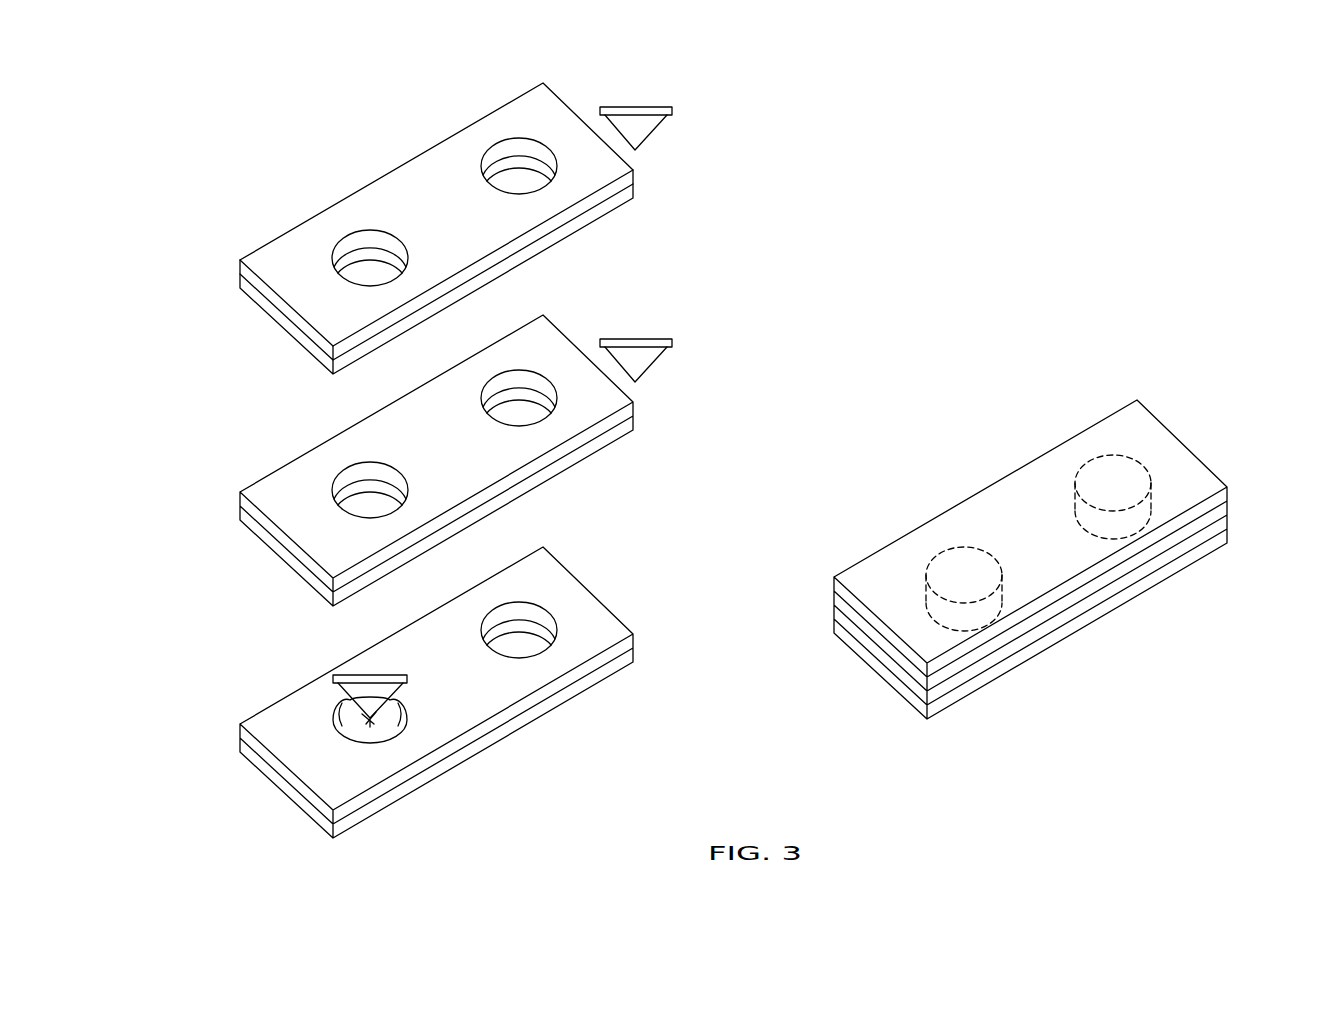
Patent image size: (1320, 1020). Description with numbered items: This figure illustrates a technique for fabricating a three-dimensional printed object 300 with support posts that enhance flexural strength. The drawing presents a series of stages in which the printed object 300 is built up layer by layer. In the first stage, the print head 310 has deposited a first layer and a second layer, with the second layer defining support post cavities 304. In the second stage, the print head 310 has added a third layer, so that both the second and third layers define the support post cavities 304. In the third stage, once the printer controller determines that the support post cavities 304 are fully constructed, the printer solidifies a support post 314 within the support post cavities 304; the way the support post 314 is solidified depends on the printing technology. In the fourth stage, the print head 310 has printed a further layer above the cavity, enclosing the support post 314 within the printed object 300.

The 3D-printed object 300 is at (1044, 135).
The support post cavities 304 is at (505, 148).
The print head 310 is at (650, 108).
The support post 314 is at (368, 732).